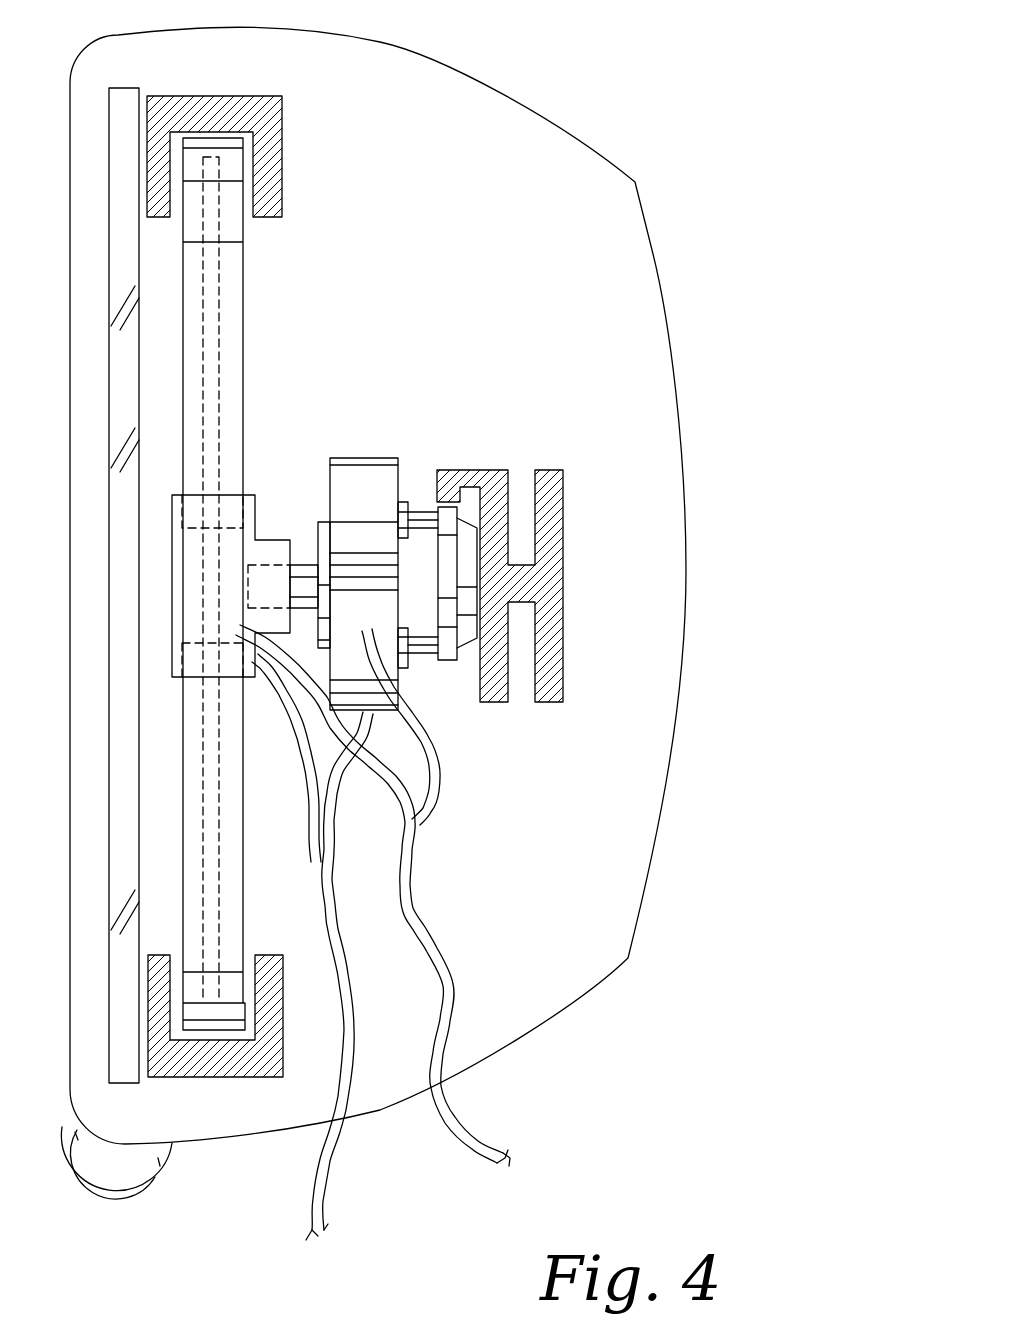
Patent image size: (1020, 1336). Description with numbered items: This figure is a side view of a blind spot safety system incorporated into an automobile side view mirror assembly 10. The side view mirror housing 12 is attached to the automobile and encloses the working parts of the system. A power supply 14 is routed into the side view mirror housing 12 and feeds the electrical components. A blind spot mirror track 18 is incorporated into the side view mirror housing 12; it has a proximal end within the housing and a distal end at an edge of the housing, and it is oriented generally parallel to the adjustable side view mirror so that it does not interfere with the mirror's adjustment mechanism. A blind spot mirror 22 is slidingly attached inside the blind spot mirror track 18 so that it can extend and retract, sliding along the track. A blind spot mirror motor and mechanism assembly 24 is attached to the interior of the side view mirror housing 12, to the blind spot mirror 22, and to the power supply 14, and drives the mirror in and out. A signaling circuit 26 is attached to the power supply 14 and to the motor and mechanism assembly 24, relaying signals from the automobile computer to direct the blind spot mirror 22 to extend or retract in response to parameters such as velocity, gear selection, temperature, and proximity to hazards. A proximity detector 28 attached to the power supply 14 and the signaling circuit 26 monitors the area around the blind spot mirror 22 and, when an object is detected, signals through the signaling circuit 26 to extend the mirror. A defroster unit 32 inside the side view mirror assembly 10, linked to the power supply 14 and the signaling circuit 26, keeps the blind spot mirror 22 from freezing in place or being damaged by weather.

The side view mirror assembly 10 is at (772, 248).
The side view mirror housing 12 is at (487, 77).
The power supply 14 is at (332, 1158).
The blind spot mirror track 18 is at (270, 125).
The blind spot mirror 22 is at (246, 338).
The blind spot mirror motor and mechanism assembly 24 is at (377, 495).
The signaling circuit 26 is at (424, 915).
The proximity detector 28 is at (115, 1165).
The defroster unit 32 is at (232, 598).